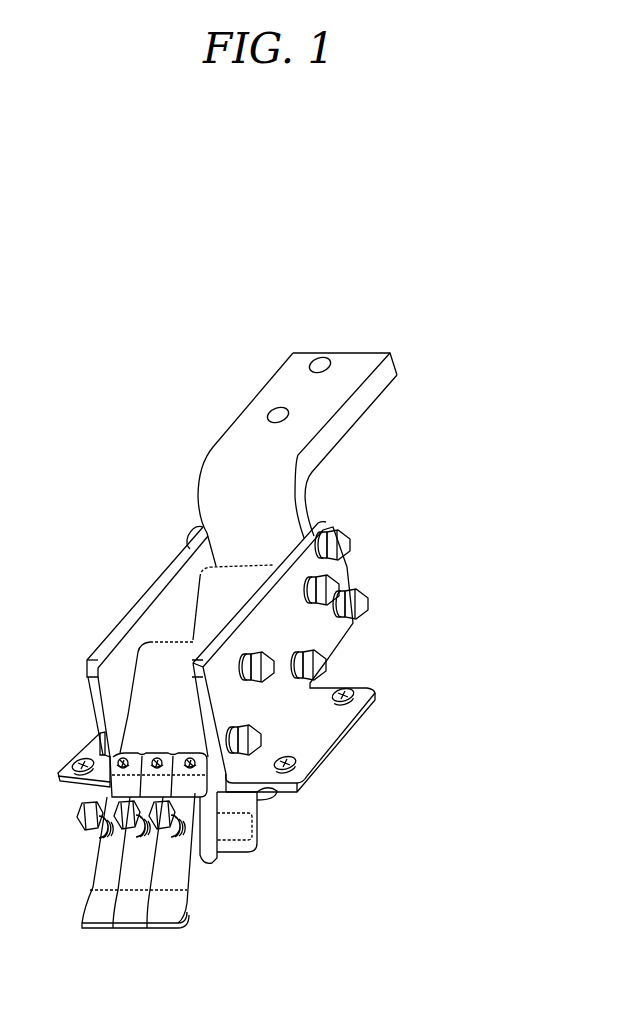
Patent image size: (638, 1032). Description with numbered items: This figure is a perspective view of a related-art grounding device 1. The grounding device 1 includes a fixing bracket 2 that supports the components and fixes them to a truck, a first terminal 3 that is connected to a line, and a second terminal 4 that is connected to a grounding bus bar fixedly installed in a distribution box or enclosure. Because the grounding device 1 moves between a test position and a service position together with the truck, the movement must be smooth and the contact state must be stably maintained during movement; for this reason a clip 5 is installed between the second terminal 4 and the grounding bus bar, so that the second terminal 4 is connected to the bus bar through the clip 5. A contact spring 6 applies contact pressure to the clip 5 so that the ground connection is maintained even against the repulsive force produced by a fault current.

The grounding device 1 is at (60, 446).
The fixing bracket 2 is at (245, 600).
The first terminal 3 is at (228, 450).
The second terminal 4 is at (155, 700).
The clip 5 is at (102, 878).
The contact spring 6 is at (102, 840).